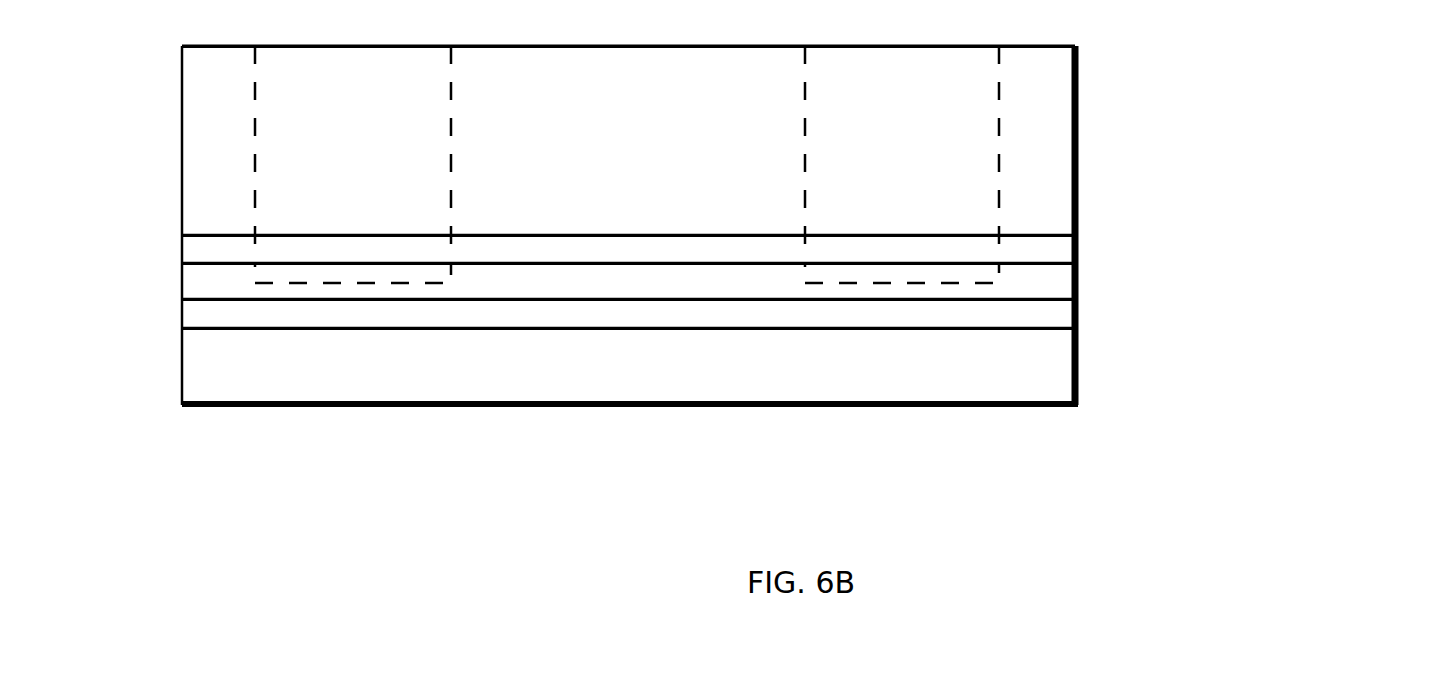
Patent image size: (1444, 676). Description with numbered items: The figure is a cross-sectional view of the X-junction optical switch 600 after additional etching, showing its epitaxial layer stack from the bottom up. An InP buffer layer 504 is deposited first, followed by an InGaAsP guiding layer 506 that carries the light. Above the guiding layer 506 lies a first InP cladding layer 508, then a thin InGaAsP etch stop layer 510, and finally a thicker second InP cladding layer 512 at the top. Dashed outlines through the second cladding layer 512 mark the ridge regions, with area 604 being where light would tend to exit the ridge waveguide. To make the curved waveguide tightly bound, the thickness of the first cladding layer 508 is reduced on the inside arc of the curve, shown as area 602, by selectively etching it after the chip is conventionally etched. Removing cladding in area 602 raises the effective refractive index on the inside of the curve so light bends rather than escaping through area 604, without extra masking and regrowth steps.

The X-junction optical switch 600 is at (331, 490).
The second InP cladding layer 512 is at (1068, 58).
The etch stop layer 510 is at (1066, 244).
The first InP cladding layer 508 is at (1066, 296).
The guiding layer 506 is at (1066, 326).
The buffer layer 504 is at (1066, 390).
The area 602 is at (256, 276).
The area 604 is at (457, 101).